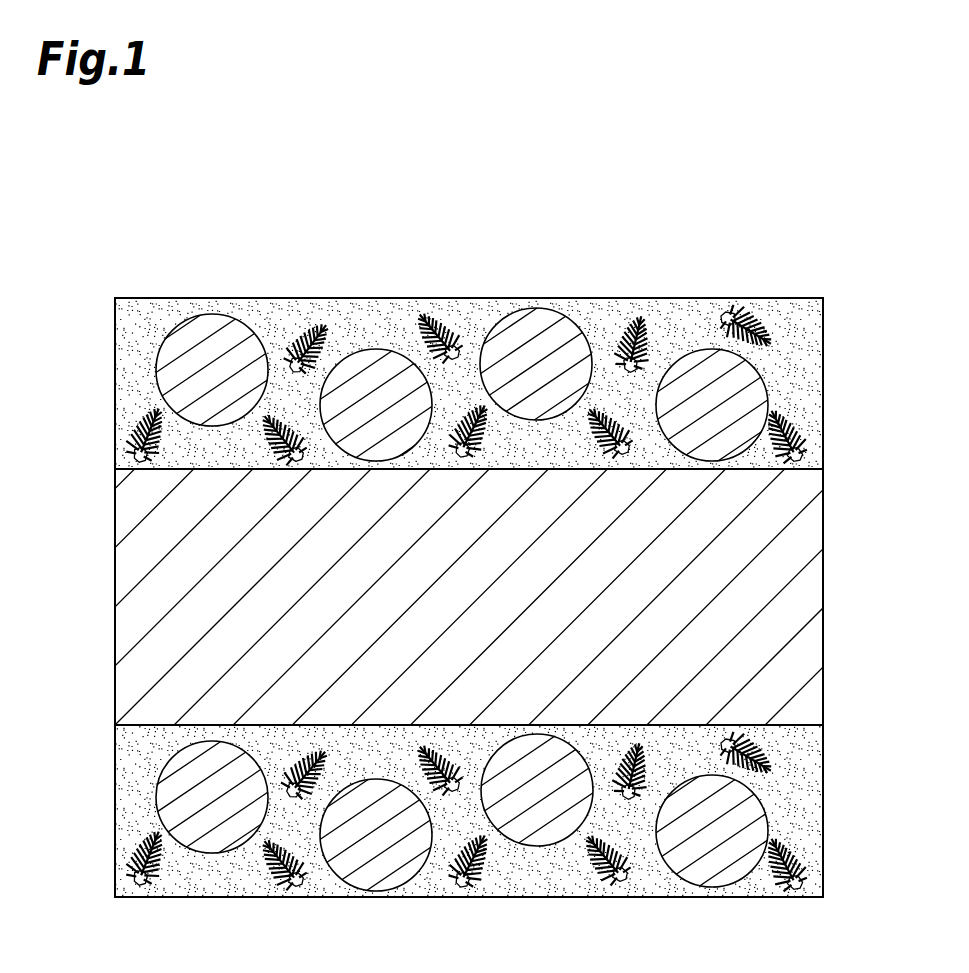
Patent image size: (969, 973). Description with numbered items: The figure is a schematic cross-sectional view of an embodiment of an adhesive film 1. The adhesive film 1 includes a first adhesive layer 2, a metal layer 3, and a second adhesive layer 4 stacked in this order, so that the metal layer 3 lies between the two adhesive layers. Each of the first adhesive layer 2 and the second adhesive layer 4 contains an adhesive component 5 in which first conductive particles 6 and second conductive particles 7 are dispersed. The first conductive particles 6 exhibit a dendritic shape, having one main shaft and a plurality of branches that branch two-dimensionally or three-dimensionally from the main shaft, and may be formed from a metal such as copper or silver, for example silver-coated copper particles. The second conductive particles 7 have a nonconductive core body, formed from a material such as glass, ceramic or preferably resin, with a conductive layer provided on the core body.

The adhesive film 1 is at (761, 250).
The first adhesive layer 2 is at (878, 752).
The metal layer 3 is at (812, 598).
The second adhesive layer 4 is at (878, 325).
The adhesive component 5 is at (800, 338).
The first conductive particles 6 is at (290, 447).
The second conductive particles 7 is at (535, 333).